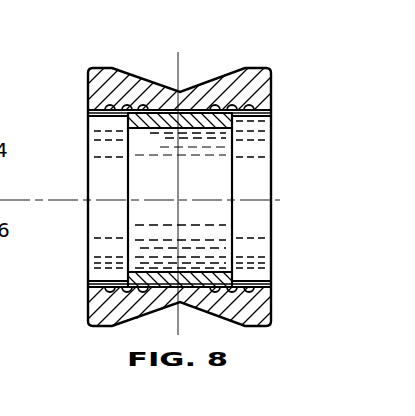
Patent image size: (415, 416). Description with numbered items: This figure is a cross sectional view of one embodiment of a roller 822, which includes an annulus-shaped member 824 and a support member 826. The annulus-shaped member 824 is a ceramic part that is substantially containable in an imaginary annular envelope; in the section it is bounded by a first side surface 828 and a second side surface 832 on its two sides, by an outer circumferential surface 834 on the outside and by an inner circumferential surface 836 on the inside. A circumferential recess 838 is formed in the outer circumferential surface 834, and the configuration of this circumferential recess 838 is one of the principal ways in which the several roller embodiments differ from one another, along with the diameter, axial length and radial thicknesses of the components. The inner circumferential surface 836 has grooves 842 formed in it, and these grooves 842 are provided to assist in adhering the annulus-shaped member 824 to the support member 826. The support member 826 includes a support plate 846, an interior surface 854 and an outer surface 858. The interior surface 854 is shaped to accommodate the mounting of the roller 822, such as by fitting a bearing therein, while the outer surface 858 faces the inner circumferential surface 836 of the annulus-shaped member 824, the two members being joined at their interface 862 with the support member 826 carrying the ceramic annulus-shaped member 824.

The roller 822 is at (84, 52).
The annulus-shaped member 824 is at (271, 70).
The support member 826 is at (272, 115).
The first side surface 828 is at (88, 95).
The second side surface 832 is at (247, 88).
The outer circumferential surface 834 is at (262, 68).
The inner circumferential surface 836 is at (241, 110).
The circumferential recess 838 is at (204, 86).
The grooves 842 is at (237, 117).
The support plate 846 is at (110, 133).
The interior surface 854 is at (255, 272).
The outer surface 858 is at (262, 292).
The end wall 862 is at (88, 288).